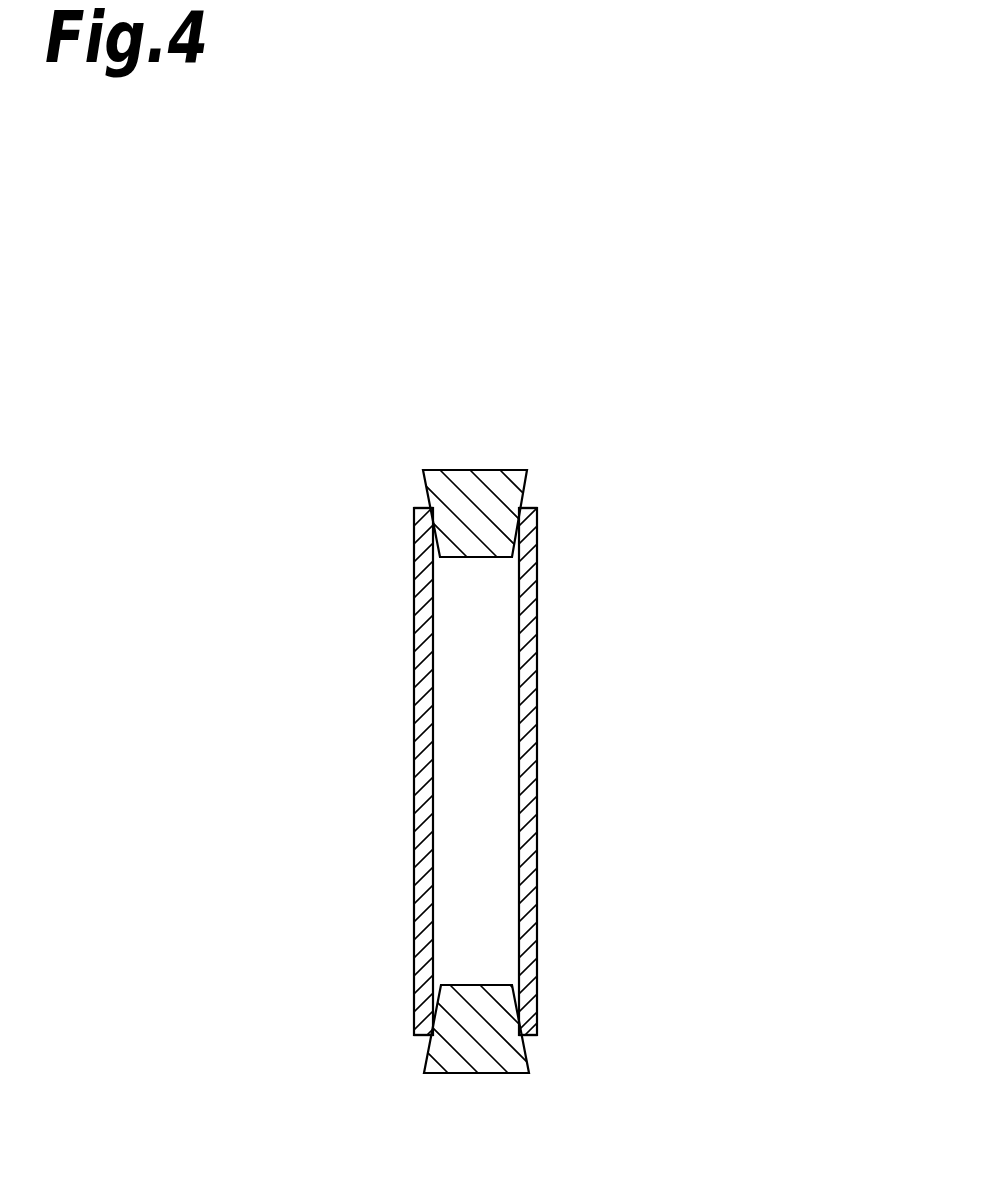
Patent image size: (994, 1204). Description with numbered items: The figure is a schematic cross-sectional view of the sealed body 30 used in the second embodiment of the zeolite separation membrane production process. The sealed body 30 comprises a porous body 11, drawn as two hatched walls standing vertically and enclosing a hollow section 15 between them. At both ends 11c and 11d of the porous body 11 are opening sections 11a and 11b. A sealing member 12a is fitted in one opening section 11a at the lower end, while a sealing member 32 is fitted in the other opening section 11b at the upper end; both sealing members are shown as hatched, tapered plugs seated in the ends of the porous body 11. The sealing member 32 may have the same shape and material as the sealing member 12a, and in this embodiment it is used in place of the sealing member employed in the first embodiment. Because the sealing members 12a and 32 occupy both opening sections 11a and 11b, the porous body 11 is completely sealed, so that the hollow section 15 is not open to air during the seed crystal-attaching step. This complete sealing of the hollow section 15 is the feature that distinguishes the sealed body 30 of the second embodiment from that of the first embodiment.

The sealed body 30 is at (741, 305).
The porous body 11 is at (537, 714).
The opening section 11a is at (531, 1043).
The opening section 11b is at (532, 500).
The end 11c is at (414, 1013).
The end 11d is at (414, 532).
The sealing member 12a is at (483, 1073).
The hollow section 15 is at (455, 776).
The sealing member 32 is at (517, 470).